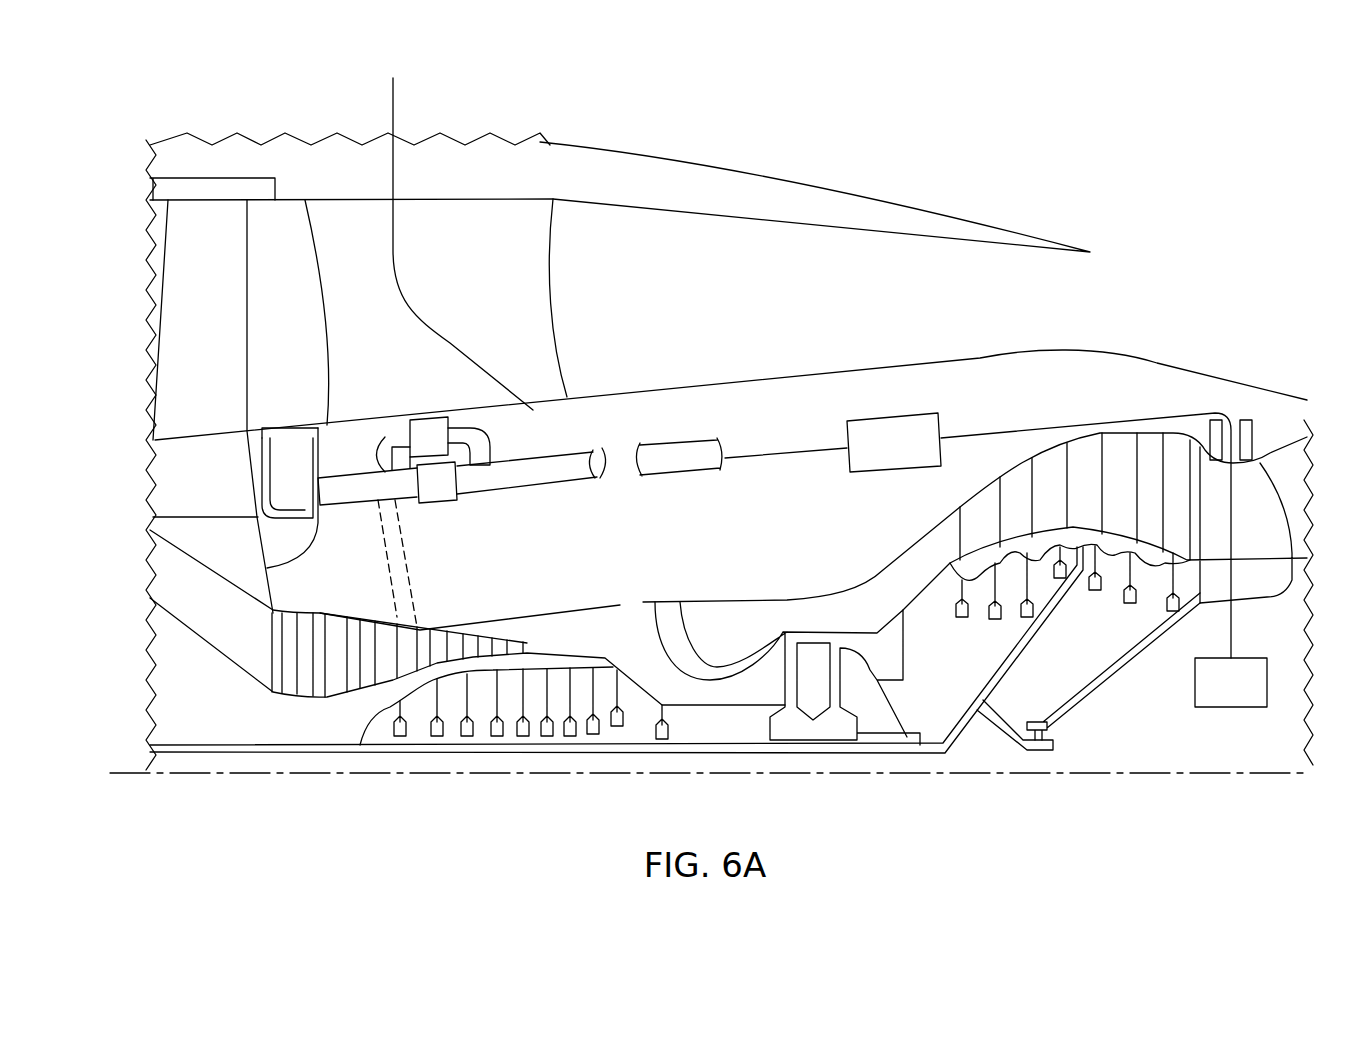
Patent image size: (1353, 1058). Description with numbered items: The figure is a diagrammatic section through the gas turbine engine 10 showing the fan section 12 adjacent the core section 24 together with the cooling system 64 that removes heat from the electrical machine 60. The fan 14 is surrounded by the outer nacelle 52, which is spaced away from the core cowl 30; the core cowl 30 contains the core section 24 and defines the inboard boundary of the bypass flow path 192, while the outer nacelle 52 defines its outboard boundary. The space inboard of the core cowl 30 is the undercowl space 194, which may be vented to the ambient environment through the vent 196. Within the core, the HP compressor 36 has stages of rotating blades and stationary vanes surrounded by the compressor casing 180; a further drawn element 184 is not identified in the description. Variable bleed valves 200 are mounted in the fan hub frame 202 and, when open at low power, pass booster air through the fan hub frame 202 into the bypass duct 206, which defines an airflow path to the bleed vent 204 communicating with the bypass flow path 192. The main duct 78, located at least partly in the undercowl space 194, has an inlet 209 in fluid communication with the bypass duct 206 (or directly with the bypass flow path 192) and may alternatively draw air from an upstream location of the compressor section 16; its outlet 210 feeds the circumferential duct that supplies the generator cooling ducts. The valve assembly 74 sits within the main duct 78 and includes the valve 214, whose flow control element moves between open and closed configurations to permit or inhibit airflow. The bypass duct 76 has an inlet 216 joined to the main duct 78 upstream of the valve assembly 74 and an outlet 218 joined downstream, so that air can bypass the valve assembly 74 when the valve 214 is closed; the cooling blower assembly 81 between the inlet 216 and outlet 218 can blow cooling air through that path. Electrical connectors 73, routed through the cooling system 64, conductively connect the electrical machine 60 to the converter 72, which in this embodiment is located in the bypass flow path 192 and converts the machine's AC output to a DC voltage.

The gas turbine engine 10 is at (1131, 150).
The fan section 12 is at (268, 238).
The fan 14 is at (185, 268).
The compressor section 16 is at (255, 728).
The core section 24 is at (735, 335).
The core cowl 30 is at (1128, 358).
The HP compressor 36 is at (338, 720).
The outer nacelle 52 is at (753, 178).
The electrical machine 60 is at (1226, 700).
The cooling system 64 is at (575, 432).
The converter 72 is at (882, 455).
The electrical connectors 73 is at (1030, 430).
The valve assembly 74 is at (453, 490).
The bypass duct 76 is at (393, 435).
The main duct 78 is at (533, 483).
The cooling blower assembly 81 is at (428, 418).
The compressor casing 180 is at (380, 618).
The acoustic panel 184 is at (422, 633).
The bypass flow path 192 is at (463, 243).
The undercowl space 194 is at (910, 385).
The vent 196 is at (1302, 418).
The variable bleed valves 200 is at (205, 515).
The fan hub frame 202 is at (160, 493).
The bleed vent 204 is at (280, 428).
The bypass duct 206 is at (302, 532).
The inlet 209 is at (313, 493).
The outlet 210 is at (718, 450).
The valve 214 is at (442, 497).
The inlet 216 is at (385, 465).
The outlet 218 is at (500, 465).